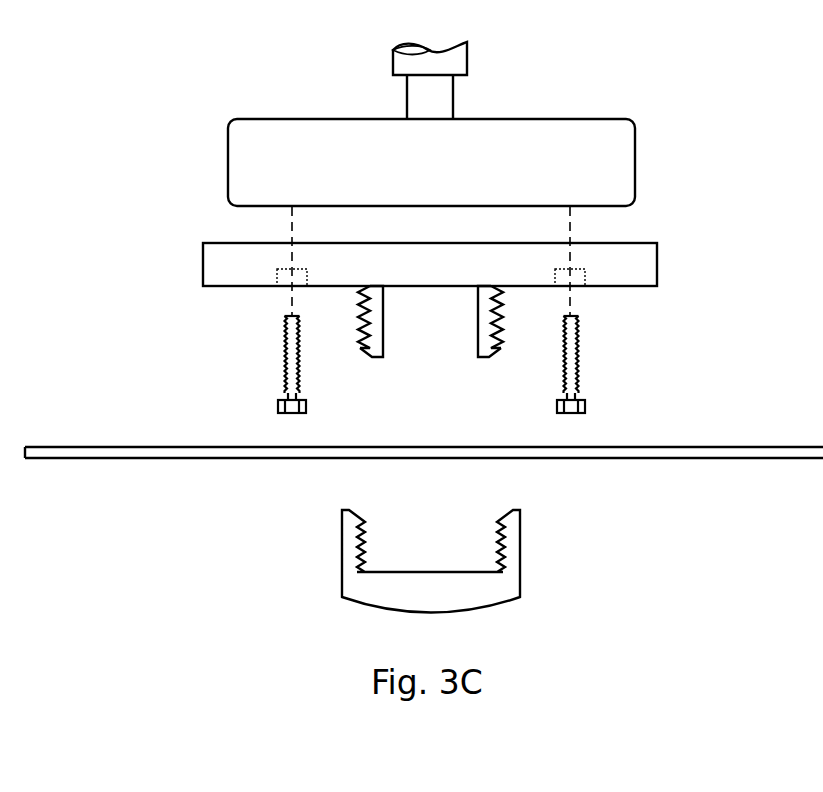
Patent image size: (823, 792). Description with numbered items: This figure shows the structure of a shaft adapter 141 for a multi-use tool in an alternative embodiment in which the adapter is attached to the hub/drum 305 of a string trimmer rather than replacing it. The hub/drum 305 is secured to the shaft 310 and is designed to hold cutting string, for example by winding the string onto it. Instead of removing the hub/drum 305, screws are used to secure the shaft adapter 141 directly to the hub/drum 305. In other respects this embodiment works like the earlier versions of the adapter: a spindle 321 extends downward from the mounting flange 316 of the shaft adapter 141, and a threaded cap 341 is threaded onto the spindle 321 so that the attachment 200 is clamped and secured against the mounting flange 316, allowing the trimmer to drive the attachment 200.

The shaft adapter 141 is at (694, 248).
The attachment 200 is at (648, 447).
The hub/drum 305 is at (228, 169).
The shaft 310 is at (455, 98).
The mounting flange 316 is at (620, 287).
The spindle 321 is at (362, 320).
The threaded cap 341 is at (520, 562).